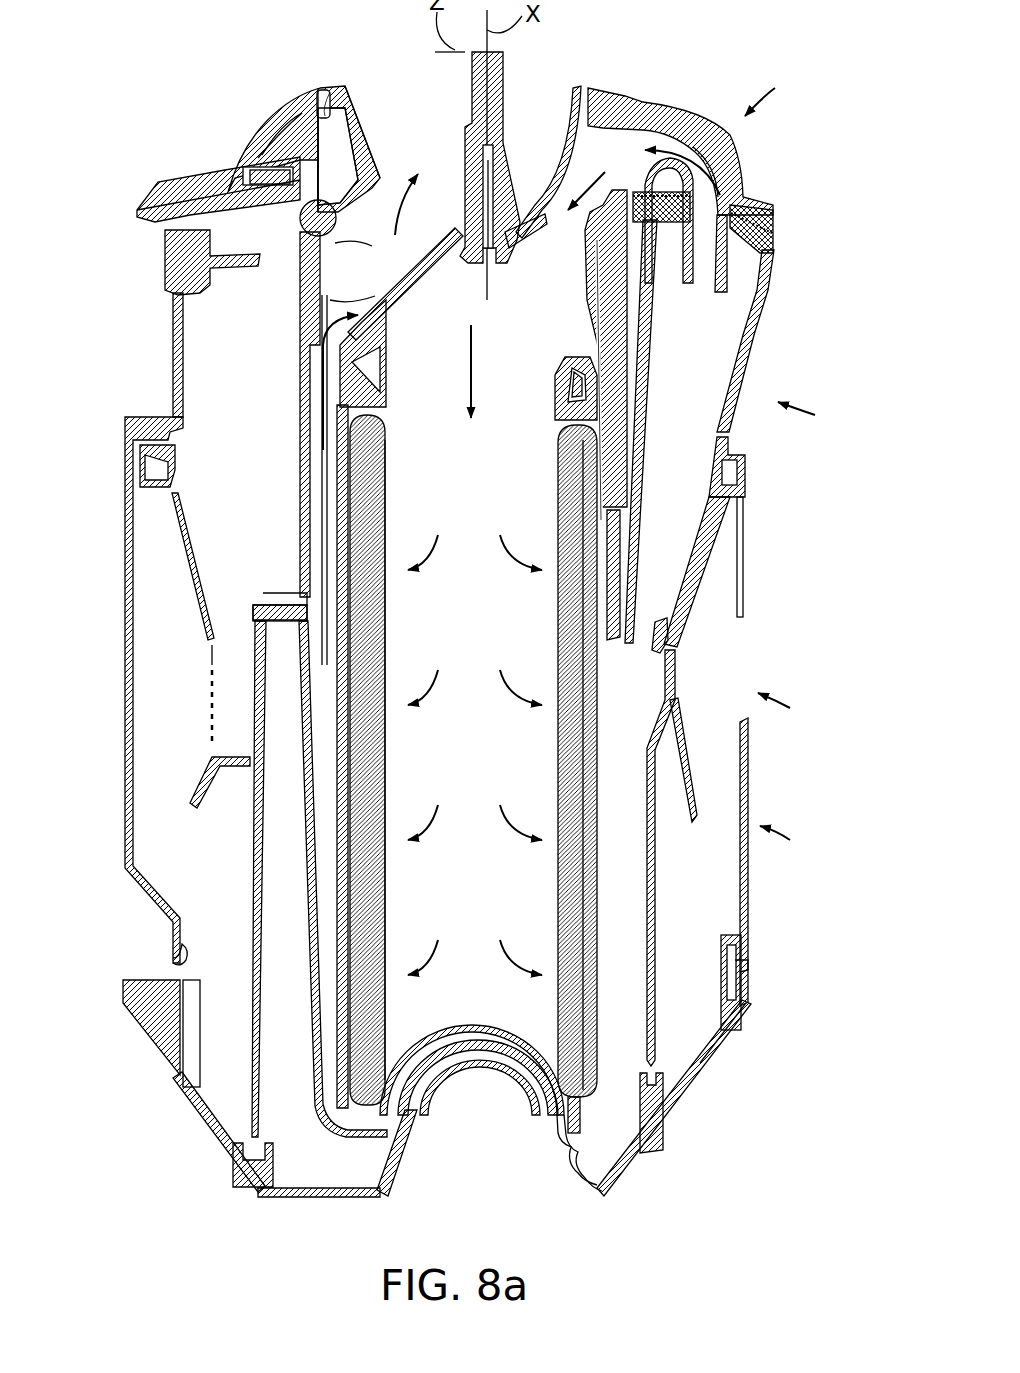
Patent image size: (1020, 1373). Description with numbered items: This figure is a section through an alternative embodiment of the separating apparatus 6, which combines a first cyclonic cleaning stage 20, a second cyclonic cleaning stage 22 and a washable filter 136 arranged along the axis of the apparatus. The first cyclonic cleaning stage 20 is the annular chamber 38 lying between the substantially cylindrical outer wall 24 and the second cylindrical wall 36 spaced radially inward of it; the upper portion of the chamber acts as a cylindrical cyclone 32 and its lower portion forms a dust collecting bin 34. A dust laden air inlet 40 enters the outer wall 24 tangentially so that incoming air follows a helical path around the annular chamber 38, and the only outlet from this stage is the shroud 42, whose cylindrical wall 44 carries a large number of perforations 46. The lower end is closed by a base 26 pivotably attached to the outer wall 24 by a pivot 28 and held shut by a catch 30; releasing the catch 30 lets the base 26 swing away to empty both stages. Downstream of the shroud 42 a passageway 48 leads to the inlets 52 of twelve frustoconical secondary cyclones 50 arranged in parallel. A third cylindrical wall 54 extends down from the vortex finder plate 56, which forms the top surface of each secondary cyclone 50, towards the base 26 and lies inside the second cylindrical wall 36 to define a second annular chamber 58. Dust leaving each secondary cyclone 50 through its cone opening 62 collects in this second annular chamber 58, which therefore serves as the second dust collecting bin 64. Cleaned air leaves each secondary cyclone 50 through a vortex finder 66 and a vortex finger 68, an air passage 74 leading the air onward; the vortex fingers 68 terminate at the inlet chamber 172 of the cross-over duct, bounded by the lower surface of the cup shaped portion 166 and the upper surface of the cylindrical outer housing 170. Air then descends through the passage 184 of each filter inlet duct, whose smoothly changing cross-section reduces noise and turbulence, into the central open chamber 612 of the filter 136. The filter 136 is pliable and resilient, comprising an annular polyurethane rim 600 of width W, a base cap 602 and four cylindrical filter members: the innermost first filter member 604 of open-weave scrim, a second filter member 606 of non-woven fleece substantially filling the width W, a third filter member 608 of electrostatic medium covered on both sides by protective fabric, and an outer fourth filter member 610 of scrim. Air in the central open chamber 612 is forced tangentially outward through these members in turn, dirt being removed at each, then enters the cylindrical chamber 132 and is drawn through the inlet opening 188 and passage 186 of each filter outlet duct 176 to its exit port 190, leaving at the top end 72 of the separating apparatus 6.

The separating apparatus 6 is at (765, 88).
The first cyclonic cleaning stage 20 is at (475, 690).
The second cyclonic cleaning stage 22 is at (809, 418).
The outer wall 24 is at (748, 913).
The base 26 is at (318, 1200).
The pivot 28 is at (730, 1010).
The catch 30 is at (177, 957).
The cylindrical cyclone 32 is at (684, 1004).
The dust collecting bin 34 is at (700, 1053).
The second cylindrical wall 36 is at (655, 912).
The annular chamber 38 is at (696, 846).
The dust laden air inlet 40 is at (789, 710).
The shroud 42 is at (210, 638).
The cylindrical wall 44 is at (212, 663).
The perforations 46 is at (210, 708).
The passageway 48 is at (625, 463).
The secondary cyclones 50 is at (720, 312).
The inlets 52 is at (227, 243).
The third cylindrical wall 54 is at (597, 853).
The vortex finder plate 56 is at (770, 235).
The second annular chamber 58 is at (619, 969).
The cone opening 62 is at (650, 622).
The second dust collecting bin 64 is at (620, 1145).
The vortex finder 66 is at (708, 262).
The vortex fingers 68 is at (680, 130).
The top end 72 is at (292, 100).
The air passage 74 is at (417, 1030).
The cylindrical chamber 132 is at (323, 797).
The filter 136 is at (547, 1128).
The cup shaped portion 166 is at (345, 100).
The cylindrical outer housing 170 is at (300, 297).
The inlet chamber 172 is at (345, 165).
The filter outlet ducts 176 is at (170, 182).
The passage 184 is at (511, 173).
The passage 186 is at (302, 113).
The inlet opening 188 is at (250, 160).
The exit port 190 is at (340, 86).
The rim 600 is at (352, 362).
The base cap 602 is at (517, 1063).
The first filter member 604 is at (383, 480).
The second filter member 606 is at (367, 487).
The third filter member 608 is at (353, 533).
The fourth filter member 610 is at (340, 563).
The central open chamber 612 is at (472, 611).
The width W is at (566, 384).